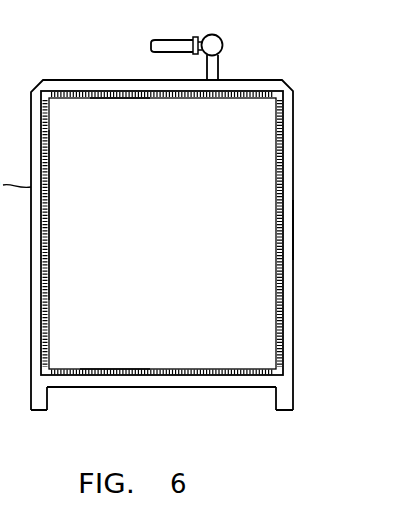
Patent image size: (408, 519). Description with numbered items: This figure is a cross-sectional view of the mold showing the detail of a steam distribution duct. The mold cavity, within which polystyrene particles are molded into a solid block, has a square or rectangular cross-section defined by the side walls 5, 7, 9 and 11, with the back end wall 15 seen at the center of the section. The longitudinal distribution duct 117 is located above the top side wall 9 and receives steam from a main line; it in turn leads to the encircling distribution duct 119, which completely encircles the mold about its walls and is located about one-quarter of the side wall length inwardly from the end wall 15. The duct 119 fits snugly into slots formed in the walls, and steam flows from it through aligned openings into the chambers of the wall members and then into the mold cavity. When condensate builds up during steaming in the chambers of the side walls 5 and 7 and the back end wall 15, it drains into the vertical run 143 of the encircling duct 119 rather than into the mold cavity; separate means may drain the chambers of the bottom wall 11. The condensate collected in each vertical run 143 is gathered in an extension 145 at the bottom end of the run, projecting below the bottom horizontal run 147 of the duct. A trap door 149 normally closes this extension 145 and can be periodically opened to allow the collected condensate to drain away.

The side wall 5 is at (276, 238).
The side wall 7 is at (50, 224).
The top side wall 9 is at (117, 99).
The bottom wall 11 is at (108, 368).
The end wall 15 is at (178, 210).
The longitudinal distribution duct 117 is at (233, 30).
The encircling distribution duct 119 is at (293, 159).
The vertical run 143 is at (293, 232).
The extension 145 is at (48, 400).
The bottom horizontal run 147 is at (132, 389).
The trap door 149 is at (37, 421).